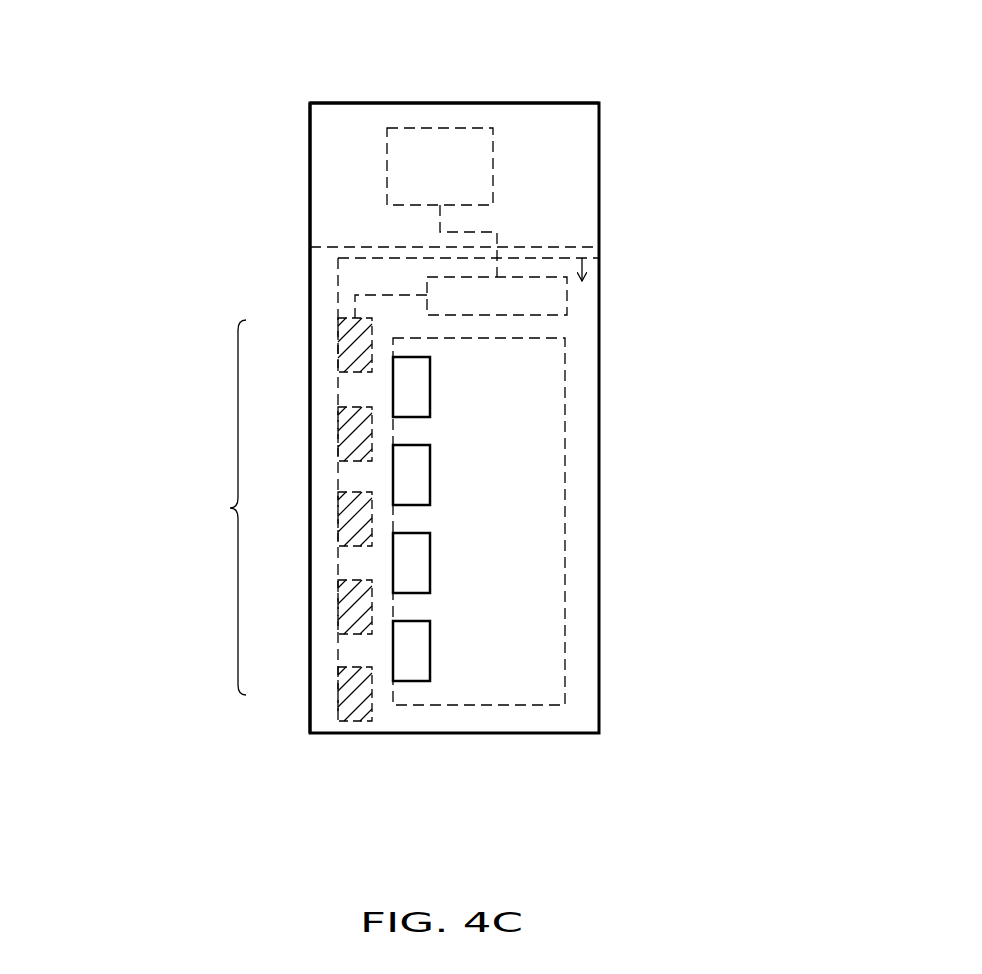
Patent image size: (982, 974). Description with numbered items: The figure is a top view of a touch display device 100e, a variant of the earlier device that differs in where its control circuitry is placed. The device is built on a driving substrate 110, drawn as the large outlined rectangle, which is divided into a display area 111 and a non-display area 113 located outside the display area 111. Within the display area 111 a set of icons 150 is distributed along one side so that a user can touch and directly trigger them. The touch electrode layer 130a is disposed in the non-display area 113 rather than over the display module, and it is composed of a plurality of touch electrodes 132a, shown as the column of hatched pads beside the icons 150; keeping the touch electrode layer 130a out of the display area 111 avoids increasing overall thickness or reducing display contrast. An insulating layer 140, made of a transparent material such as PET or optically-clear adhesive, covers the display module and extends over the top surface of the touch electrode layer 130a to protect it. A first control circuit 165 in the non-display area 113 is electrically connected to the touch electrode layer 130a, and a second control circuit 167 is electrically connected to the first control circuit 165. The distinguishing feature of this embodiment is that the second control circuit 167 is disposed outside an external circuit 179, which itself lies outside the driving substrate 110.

The driving substrate 110 is at (582, 722).
The insulating layer 140 is at (557, 102).
The external circuit 179 is at (310, 137).
The second control circuit 167 is at (436, 145).
The non-display area 113 is at (583, 246).
The first control circuit 165 is at (567, 305).
The display area 111 is at (522, 356).
The icons 150 is at (420, 383).
The touch electrodes 132a is at (345, 349).
The touch electrode layer 130a is at (213, 507).
The touch display device 100e is at (356, 767).